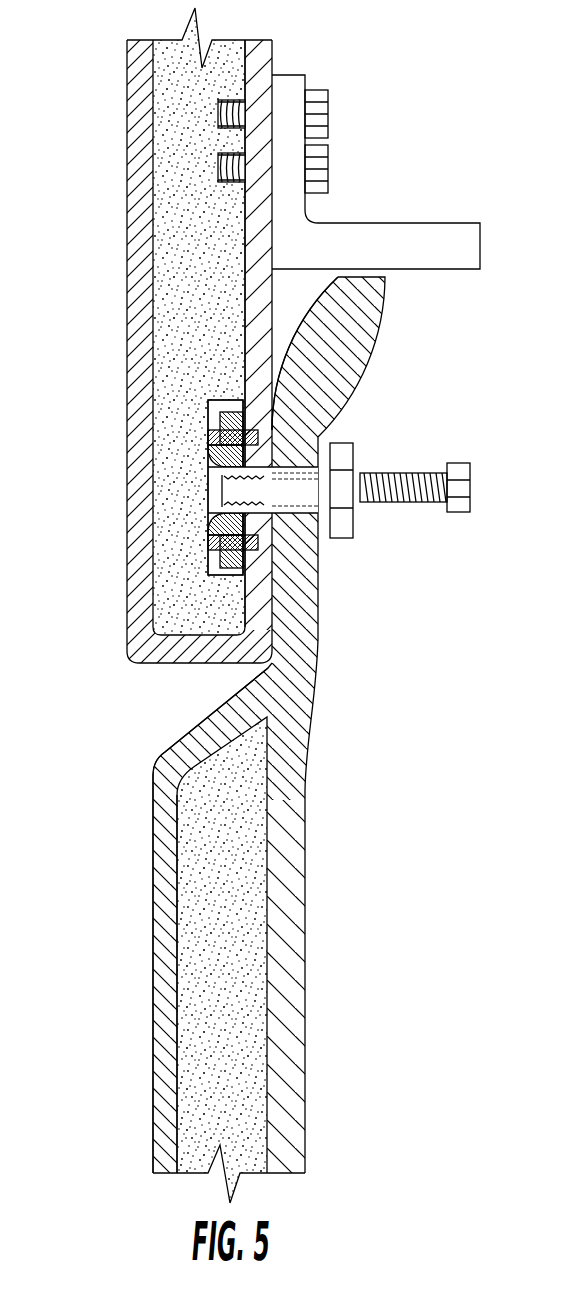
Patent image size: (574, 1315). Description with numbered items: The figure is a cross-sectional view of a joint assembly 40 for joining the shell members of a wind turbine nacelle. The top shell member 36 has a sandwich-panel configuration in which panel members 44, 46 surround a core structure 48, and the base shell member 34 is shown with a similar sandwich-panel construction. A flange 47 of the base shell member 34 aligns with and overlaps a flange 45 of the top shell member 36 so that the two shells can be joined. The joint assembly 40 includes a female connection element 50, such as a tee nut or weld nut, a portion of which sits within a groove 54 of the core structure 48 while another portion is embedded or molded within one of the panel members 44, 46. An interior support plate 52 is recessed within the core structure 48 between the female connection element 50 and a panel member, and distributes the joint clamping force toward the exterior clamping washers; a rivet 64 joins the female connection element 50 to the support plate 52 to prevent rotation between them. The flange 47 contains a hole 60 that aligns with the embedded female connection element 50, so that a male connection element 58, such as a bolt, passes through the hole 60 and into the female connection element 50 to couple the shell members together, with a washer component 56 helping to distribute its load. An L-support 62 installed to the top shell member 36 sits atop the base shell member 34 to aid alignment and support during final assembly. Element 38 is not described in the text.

The base shell member 34 is at (171, 935).
The top shell member 36 is at (147, 335).
The outer skin of lower panel 38 is at (153, 950).
The joint assembly 40 is at (217, 487).
The panel member 44 is at (140, 279).
The flange of the top shell member 45 is at (273, 307).
The panel member 46 is at (240, 237).
The flange of the base shell member 47 is at (302, 725).
The core structure 48 is at (209, 302).
The female connection element 50 is at (218, 498).
The interior support plate 52 is at (225, 548).
The groove 54 is at (210, 408).
The washer component 56 is at (355, 525).
The male connection element 58 is at (455, 512).
The hole 60 is at (297, 495).
The L-support 62 is at (450, 243).
The rivet 64 is at (240, 440).